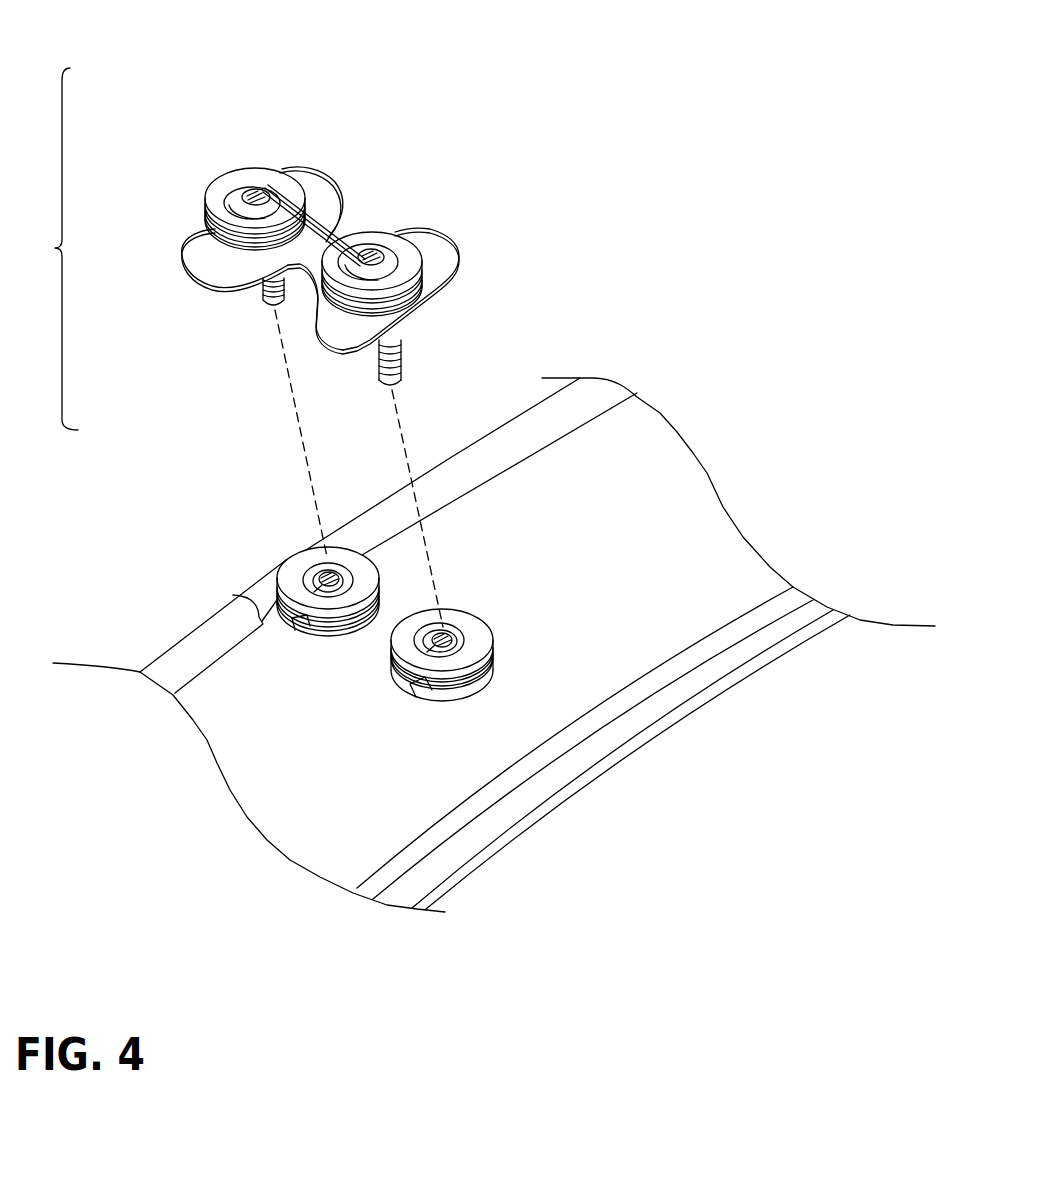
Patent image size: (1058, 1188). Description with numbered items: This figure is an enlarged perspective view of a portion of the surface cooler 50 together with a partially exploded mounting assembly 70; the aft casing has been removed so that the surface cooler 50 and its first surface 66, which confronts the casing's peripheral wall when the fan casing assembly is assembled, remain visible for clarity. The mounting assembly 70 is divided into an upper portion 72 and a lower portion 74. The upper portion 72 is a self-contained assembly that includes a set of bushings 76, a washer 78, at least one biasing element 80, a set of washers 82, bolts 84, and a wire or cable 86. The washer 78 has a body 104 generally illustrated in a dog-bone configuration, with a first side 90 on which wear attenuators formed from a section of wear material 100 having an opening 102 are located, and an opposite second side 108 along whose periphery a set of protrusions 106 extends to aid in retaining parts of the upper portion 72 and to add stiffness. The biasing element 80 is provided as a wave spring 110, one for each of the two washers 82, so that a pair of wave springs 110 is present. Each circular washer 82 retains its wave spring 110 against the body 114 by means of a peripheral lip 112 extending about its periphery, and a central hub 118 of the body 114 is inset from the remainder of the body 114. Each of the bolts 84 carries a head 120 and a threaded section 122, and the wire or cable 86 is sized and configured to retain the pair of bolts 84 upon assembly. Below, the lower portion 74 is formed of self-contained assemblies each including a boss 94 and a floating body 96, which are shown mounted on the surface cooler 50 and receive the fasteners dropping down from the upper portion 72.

The surface cooler 50 is at (674, 512).
The first surface 66 is at (724, 578).
The mounting assembly 70 is at (443, 103).
The upper portion 72 is at (321, 344).
The lower portion 74 is at (352, 542).
The bushings 76 is at (393, 334).
The washer 78 is at (335, 261).
The biasing element 80 is at (420, 300).
The washers 82 is at (228, 168).
The bolts 84 is at (250, 185).
The wire or cable 86 is at (316, 213).
The first side 90 is at (264, 292).
The boss 94 is at (418, 690).
The floating body 96 is at (315, 575).
The wear material 100 is at (298, 597).
The opening 102 is at (468, 262).
The body 104 is at (200, 228).
The protrusions 106 is at (443, 230).
The second side 108 is at (315, 200).
The wave spring 110 is at (247, 247).
The peripheral lip 112 is at (338, 300).
The body 114 is at (262, 232).
The central hub 118 is at (232, 207).
The head 120 is at (372, 255).
The threaded section 122 is at (398, 387).